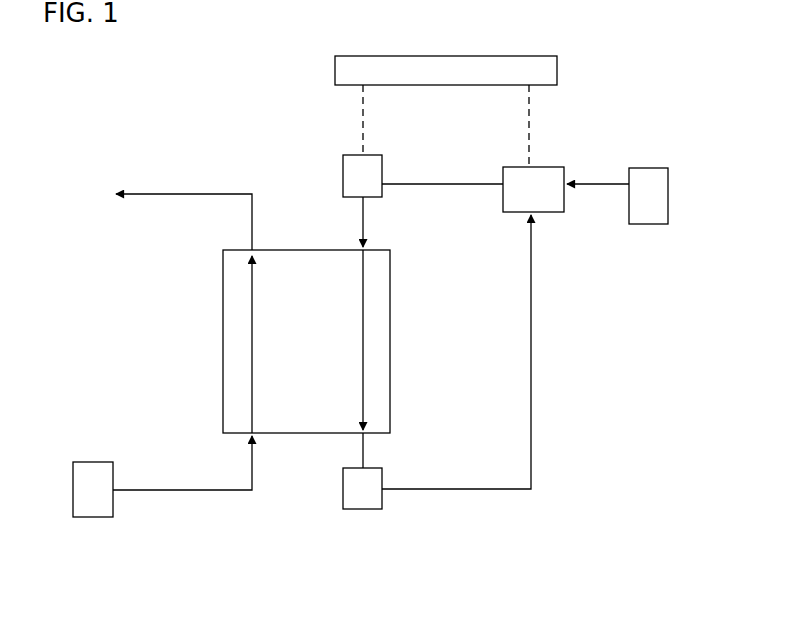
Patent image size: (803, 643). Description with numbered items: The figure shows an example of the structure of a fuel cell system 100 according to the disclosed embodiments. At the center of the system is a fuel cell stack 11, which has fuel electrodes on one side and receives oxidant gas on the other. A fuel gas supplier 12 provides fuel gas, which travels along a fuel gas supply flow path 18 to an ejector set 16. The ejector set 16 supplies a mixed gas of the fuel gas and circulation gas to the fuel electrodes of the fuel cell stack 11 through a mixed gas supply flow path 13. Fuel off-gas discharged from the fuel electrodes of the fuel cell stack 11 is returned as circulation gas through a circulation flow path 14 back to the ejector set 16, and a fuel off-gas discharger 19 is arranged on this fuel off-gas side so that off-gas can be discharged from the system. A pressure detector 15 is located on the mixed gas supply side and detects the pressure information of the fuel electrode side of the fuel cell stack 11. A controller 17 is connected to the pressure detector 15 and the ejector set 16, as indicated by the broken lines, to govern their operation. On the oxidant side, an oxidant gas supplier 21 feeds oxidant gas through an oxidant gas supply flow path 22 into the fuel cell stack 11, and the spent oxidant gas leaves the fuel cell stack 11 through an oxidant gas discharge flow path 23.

The fuel cell system 100 is at (727, 57).
The fuel cell stack 11 is at (223, 407).
The fuel gas supplier 12 is at (660, 224).
The mixed gas supply flow path 13 is at (430, 184).
The circulation flow path 14 is at (428, 489).
The pressure detector 15 is at (382, 160).
The ejector set 16 is at (540, 167).
The controller 17 is at (335, 64).
The fuel gas supply flow path 18 is at (612, 184).
The fuel off-gas discharger 19 is at (382, 509).
The oxidant gas supplier 21 is at (102, 517).
The oxidant gas supply flow path 22 is at (197, 490).
The oxidant gas discharge flow path 23 is at (180, 194).